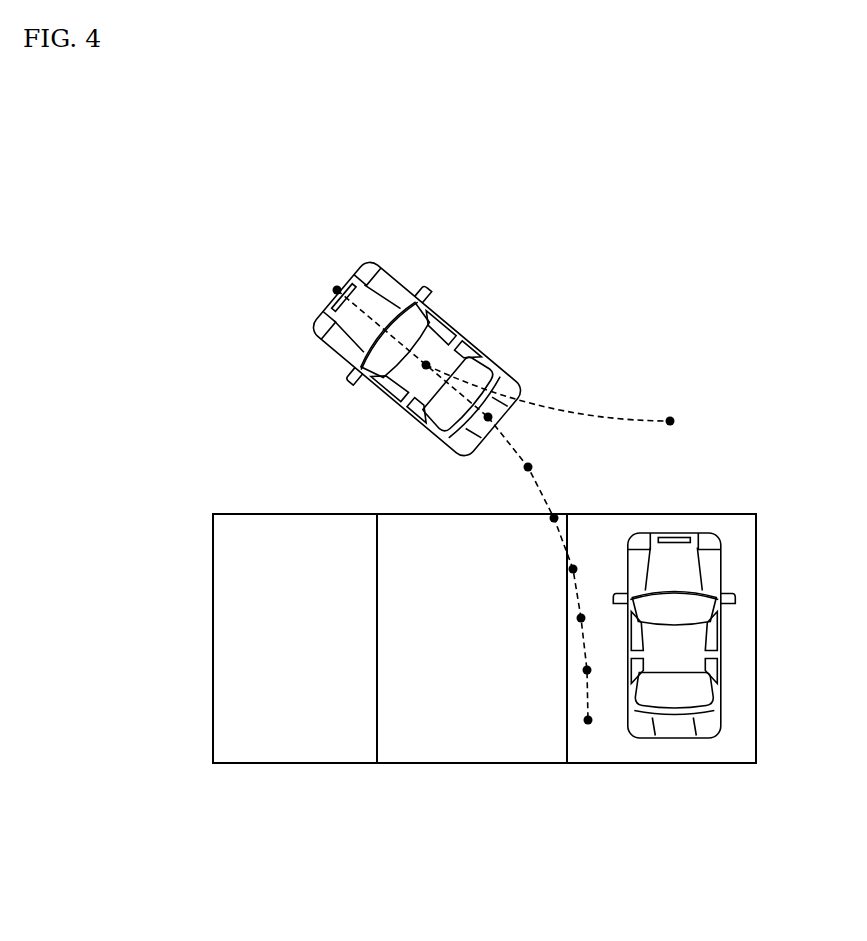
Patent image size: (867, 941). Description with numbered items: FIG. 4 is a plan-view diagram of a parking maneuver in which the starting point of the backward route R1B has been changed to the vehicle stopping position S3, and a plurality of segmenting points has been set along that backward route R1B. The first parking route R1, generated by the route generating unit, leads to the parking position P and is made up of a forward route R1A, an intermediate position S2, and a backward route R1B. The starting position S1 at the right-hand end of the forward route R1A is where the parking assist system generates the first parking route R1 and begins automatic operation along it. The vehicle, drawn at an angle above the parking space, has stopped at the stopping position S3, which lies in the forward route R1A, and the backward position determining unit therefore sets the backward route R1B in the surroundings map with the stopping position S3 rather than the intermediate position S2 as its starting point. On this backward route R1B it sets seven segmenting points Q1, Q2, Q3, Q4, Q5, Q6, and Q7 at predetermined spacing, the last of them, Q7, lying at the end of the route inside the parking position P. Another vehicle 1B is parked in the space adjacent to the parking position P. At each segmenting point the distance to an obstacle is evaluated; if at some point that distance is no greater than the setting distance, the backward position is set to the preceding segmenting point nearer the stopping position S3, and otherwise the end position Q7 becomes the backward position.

The other vehicle 1B is at (721, 572).
The parking position P is at (492, 647).
The first parking route R1 is at (548, 497).
The forward route R1A is at (548, 393).
The backward route R1B is at (540, 568).
The starting position S1 is at (670, 418).
The intermediate position S2 is at (380, 272).
The stopping position S3 is at (427, 364).
The segmenting point Q1 is at (509, 425).
The segmenting point Q2 is at (544, 466).
The segmenting point Q3 is at (542, 528).
The segmenting point Q4 is at (589, 570).
The segmenting point Q5 is at (598, 620).
The segmenting point Q6 is at (603, 671).
The segmenting point Q7 is at (604, 721).